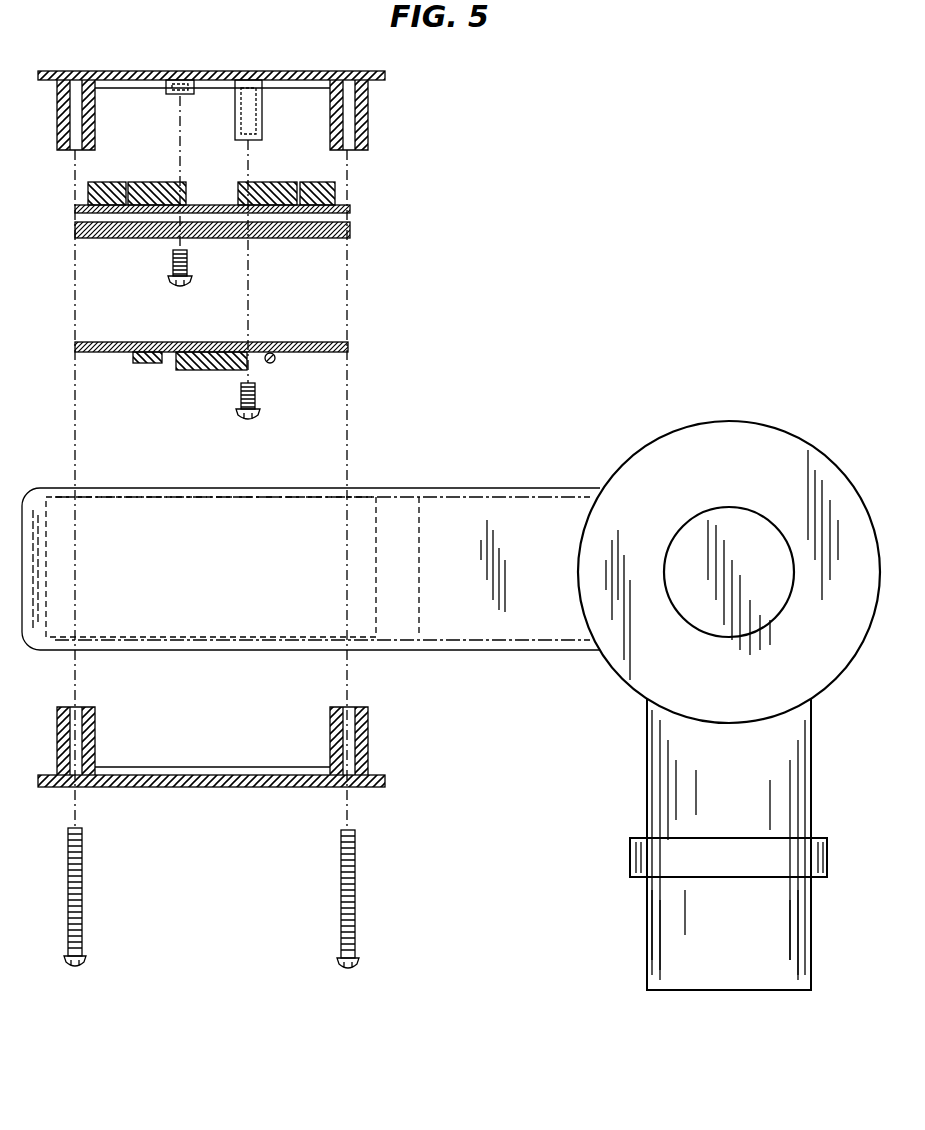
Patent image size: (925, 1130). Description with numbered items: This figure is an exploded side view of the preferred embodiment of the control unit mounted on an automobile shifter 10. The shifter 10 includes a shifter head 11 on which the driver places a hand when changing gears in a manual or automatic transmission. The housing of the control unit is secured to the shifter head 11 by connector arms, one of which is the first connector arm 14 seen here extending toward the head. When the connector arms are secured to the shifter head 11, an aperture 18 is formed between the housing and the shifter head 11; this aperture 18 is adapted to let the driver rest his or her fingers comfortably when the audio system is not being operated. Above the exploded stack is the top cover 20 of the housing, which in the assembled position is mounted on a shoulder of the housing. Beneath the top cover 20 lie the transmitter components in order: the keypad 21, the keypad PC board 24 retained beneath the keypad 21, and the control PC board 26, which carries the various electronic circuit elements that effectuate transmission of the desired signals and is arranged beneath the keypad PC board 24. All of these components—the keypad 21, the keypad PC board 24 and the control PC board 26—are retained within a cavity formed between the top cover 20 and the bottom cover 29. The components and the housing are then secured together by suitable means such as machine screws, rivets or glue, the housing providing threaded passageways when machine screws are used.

The shifter 10 is at (716, 662).
The shifter head 11 is at (615, 672).
The first connector arm 14 is at (455, 490).
The aperture 18 is at (508, 515).
The top cover 20 is at (368, 125).
The keypad 21 is at (350, 209).
The keypad PC board 24 is at (350, 230).
The control PC board 26 is at (350, 351).
The bottom cover 29 is at (368, 750).